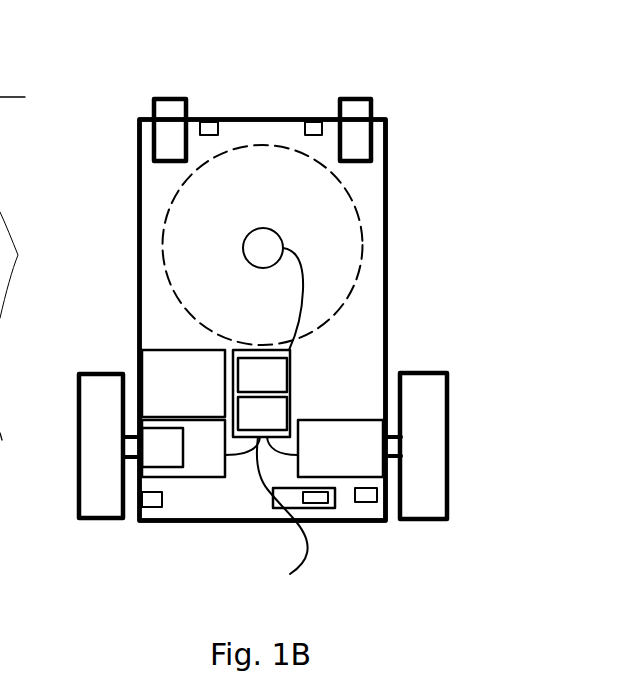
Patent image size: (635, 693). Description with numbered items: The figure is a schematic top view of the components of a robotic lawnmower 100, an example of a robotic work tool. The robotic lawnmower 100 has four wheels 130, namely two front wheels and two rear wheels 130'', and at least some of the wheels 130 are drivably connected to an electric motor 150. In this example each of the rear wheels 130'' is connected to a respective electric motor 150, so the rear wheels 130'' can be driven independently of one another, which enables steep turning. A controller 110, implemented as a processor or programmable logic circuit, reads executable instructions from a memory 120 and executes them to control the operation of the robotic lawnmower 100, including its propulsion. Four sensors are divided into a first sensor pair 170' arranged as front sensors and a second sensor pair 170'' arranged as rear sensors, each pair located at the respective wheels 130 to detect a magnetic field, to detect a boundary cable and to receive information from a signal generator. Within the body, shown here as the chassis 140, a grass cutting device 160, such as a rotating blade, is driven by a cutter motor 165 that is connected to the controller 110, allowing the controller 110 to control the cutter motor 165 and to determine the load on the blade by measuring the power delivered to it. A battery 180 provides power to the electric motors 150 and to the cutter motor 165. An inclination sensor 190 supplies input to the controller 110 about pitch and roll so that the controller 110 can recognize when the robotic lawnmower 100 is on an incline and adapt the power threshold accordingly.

The robotic lawnmower 100 is at (128, 156).
The controller 110 is at (290, 373).
The memory 120 is at (292, 415).
The wheels 130 is at (262, 87).
The rear wheels 130'' is at (227, 494).
The chassis 140 is at (158, 522).
The electric motor 150 is at (217, 460).
The grass cutting device 160 is at (173, 283).
The cutter motor 165 is at (243, 252).
The first sensor pair 170' is at (261, 80).
The second sensor pair 170'' is at (247, 554).
The battery 180 is at (155, 373).
The inclination sensor 190 is at (300, 508).